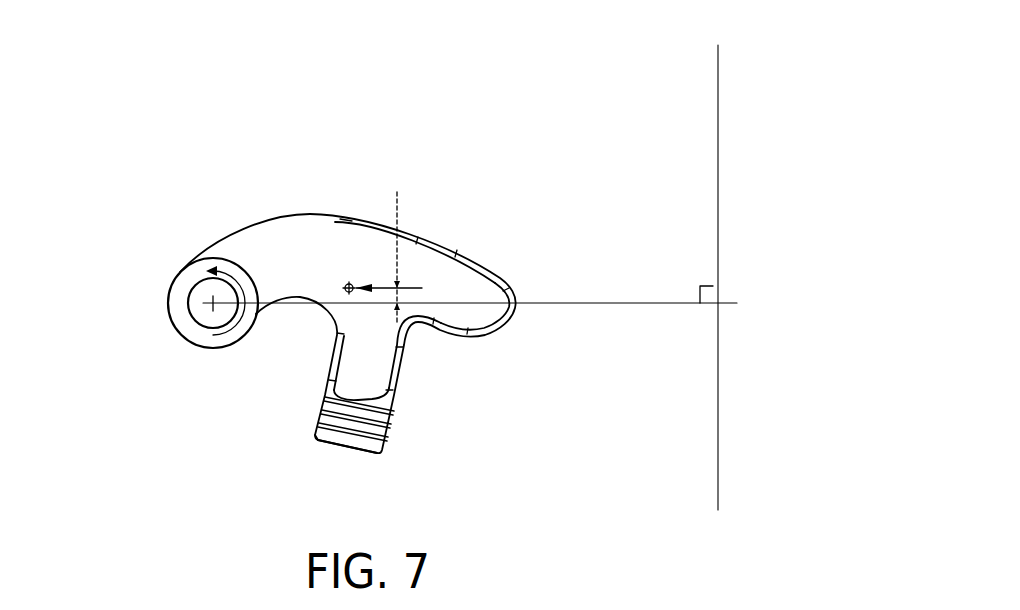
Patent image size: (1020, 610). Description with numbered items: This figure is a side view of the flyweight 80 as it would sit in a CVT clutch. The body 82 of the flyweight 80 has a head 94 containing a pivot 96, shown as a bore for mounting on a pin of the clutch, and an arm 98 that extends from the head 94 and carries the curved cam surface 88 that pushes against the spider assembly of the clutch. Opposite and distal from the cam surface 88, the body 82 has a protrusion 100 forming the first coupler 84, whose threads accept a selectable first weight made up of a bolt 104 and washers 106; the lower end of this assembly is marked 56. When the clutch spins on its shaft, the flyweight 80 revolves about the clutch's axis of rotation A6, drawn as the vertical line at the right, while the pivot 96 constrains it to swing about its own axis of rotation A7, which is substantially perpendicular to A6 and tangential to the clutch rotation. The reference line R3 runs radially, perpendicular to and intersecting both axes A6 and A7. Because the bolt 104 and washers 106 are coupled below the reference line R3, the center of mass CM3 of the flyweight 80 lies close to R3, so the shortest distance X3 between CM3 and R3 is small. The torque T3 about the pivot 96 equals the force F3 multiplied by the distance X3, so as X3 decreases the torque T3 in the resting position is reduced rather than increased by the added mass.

The flyweight 80 is at (173, 155).
The body 82 is at (453, 270).
The first coupler 84 is at (318, 387).
The foot corner 56 is at (313, 437).
The cam surface 88 is at (376, 220).
The head 94 is at (169, 313).
The pivot 96 is at (204, 328).
The arm 98 is at (517, 319).
The protrusion 100 is at (398, 386).
The bolt 104 is at (338, 430).
The washers 106 is at (394, 417).
The axis of rotation of the CVT clutch A6 is at (718, 163).
The axis of rotation of the flyweight A7 is at (213, 303).
The center of mass CM3 is at (349, 283).
The force F3 is at (415, 288).
The reference line R3 is at (588, 303).
The torque T3 is at (231, 332).
The distance X3 is at (400, 240).